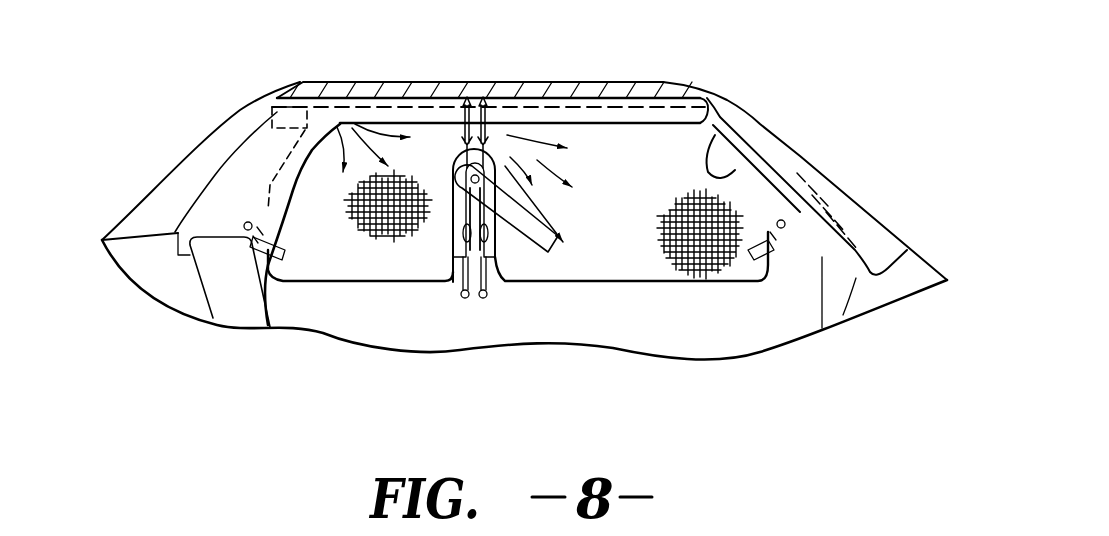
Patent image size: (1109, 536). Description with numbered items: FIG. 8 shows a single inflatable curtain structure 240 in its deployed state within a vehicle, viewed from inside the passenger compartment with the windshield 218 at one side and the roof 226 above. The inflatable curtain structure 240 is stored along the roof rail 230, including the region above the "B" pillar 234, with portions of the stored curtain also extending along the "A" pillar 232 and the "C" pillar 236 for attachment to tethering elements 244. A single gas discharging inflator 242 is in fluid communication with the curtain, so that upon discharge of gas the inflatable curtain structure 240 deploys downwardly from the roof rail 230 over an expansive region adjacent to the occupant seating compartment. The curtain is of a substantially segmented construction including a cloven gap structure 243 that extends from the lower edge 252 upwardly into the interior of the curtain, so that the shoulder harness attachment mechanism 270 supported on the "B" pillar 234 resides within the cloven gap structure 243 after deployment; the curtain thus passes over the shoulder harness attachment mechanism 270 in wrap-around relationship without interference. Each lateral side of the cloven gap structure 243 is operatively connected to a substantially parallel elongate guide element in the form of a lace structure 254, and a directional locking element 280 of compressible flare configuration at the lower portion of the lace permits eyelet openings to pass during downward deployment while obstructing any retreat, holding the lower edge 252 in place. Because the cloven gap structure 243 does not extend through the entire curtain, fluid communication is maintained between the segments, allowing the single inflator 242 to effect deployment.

The windshield 218 is at (800, 137).
The roof 226 is at (535, 78).
The roof rail 230 is at (618, 122).
The "A" pillar 232 is at (715, 135).
The "B" pillar 234 is at (497, 289).
The "C" pillar 236 is at (288, 215).
The inflatable curtain structure 240 is at (707, 292).
The gas discharging inflator 242 is at (288, 84).
The cloven gap structure 243 is at (452, 165).
The tethering elements 244 is at (260, 325).
The lower edge 252 is at (640, 283).
The lace structure 254 is at (478, 278).
The shoulder harness attachment mechanism 270 is at (493, 165).
The directional locking element 280 is at (446, 232).